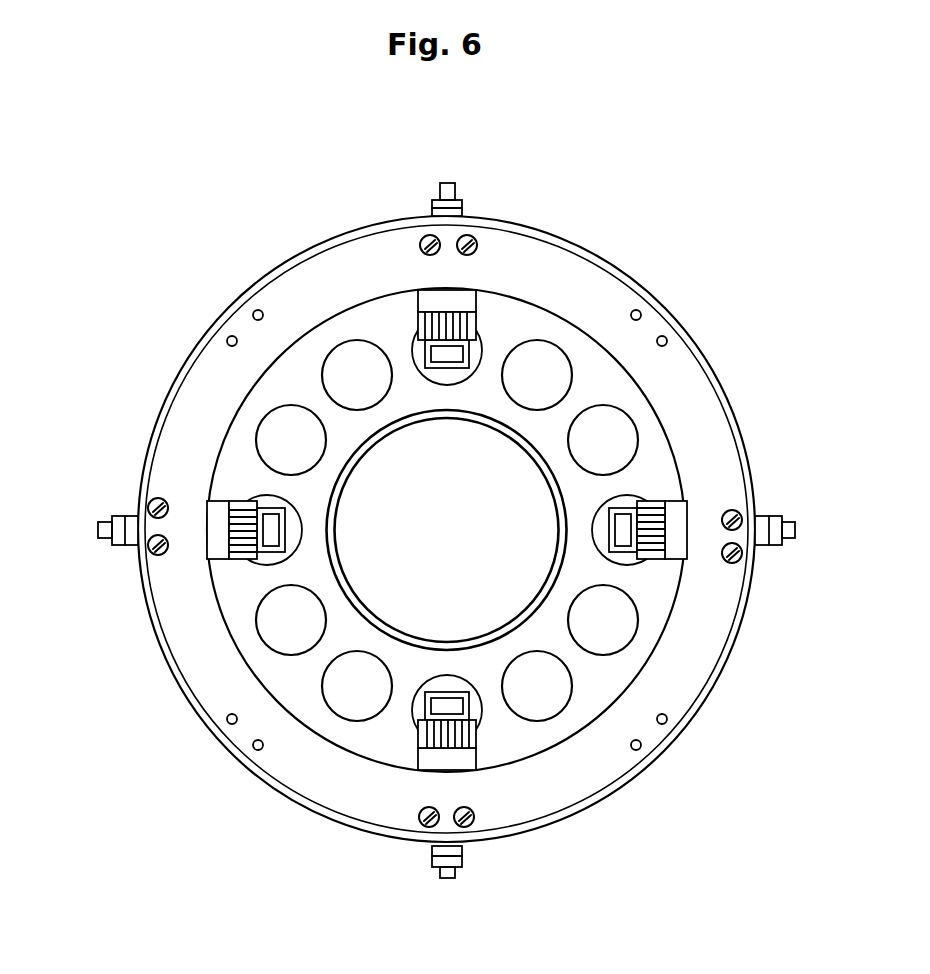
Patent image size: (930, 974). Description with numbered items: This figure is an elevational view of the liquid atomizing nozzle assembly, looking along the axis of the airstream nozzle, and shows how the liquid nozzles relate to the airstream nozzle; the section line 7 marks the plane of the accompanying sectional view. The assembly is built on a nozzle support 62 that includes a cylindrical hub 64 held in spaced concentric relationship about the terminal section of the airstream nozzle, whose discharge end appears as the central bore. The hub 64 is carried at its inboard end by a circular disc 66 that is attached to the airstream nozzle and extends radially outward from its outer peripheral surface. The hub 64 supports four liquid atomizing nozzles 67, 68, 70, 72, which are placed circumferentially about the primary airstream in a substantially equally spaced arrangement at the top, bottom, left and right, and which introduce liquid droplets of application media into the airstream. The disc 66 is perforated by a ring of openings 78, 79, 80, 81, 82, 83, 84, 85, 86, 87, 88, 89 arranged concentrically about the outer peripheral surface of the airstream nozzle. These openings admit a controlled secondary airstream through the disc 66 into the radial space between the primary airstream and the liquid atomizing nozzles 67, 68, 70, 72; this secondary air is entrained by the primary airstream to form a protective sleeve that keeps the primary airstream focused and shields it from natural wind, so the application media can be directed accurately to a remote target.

The section line 7- 7 is at (481, 535).
The nozzle support 62 is at (128, 608).
The cylindrical hub 64 is at (748, 630).
The circular disc 66 is at (561, 450).
The liquid atomizing nozzle 67 is at (250, 476).
The liquid atomizing nozzle 68 is at (477, 736).
The liquid atomizing nozzle 70 is at (657, 502).
The liquid atomizing nozzle 72 is at (476, 324).
The opening 78 is at (415, 350).
The opening 79 is at (519, 400).
The opening 80 is at (588, 470).
The opening 81 is at (619, 562).
The opening 82 is at (590, 650).
The opening 83 is at (545, 718).
The opening 84 is at (413, 716).
The opening 85 is at (370, 716).
The opening 86 is at (304, 650).
The opening 87 is at (268, 557).
The opening 88 is at (306, 470).
The opening 89 is at (375, 400).